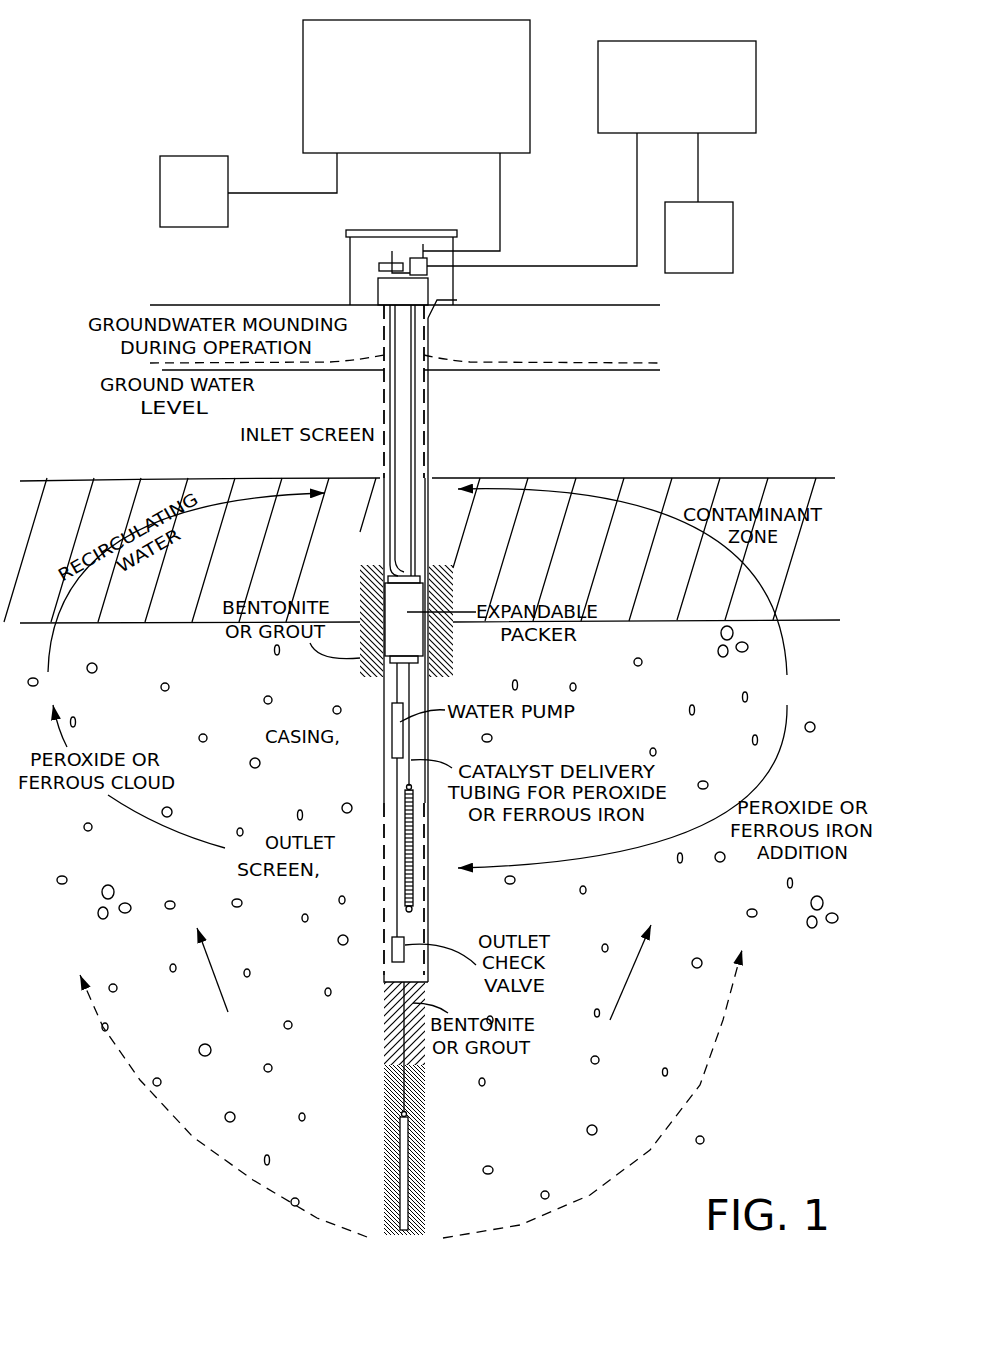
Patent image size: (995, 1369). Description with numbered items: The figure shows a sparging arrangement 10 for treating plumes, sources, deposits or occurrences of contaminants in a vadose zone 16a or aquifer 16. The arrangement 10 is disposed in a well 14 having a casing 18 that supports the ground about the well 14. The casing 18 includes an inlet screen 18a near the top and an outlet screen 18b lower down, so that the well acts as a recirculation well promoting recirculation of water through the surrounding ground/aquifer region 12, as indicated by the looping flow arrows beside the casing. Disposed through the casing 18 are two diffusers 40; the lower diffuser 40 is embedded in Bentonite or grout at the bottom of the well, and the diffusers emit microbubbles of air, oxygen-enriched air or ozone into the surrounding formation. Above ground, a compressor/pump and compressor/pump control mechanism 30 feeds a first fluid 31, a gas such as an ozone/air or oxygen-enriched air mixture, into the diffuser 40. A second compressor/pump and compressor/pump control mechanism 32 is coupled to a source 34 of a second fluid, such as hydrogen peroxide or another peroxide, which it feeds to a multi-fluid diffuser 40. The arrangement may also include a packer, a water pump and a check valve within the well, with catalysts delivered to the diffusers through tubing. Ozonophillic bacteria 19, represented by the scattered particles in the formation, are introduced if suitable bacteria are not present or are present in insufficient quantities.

The sparging arrangement 10 is at (118, 132).
The ground/aquifer region 12 is at (786, 1043).
The well 14 is at (557, 445).
The aquifer 16 is at (842, 486).
The vadose zone 16a is at (828, 620).
The casing 18 is at (399, 770).
The inlet screen 18a is at (427, 432).
The outlet screen 18b is at (375, 889).
The ozonophillic bacteria 19 is at (722, 655).
The compressor/pump and compressor/pump control mechanism 30 is at (435, 93).
The first fluid 31 is at (212, 203).
The second compressor/pump and compressor/pump control mechanism 32 is at (702, 101).
The source of second fluid 34 is at (715, 250).
The diffuser 40 is at (412, 890).